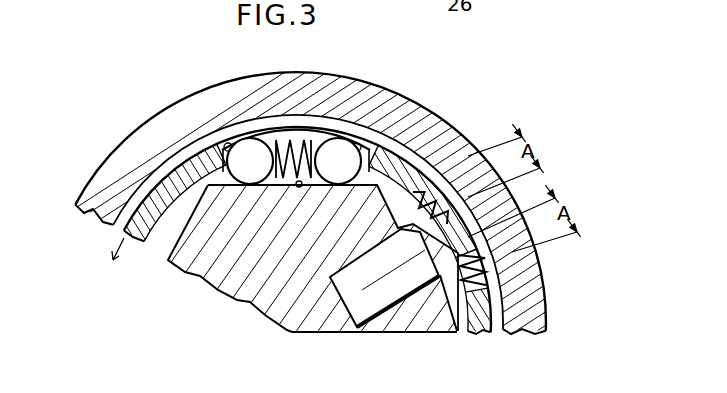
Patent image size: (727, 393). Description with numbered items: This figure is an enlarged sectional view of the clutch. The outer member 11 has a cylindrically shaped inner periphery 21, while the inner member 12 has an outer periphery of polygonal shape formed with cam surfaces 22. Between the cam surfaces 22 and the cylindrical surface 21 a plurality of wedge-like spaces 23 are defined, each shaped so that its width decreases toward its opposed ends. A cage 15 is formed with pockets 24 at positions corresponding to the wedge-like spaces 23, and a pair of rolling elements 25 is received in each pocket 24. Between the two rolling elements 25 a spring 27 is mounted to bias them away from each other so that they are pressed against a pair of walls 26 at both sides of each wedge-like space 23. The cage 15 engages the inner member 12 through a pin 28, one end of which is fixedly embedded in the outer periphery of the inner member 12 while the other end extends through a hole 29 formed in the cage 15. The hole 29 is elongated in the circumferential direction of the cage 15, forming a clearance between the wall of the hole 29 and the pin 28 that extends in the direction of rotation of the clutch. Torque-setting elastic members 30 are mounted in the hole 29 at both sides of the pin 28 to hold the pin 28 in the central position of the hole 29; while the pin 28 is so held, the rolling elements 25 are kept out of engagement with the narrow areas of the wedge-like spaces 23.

The outer member 11 is at (104, 166).
The inner member 12 is at (197, 262).
The cage 15 is at (175, 173).
The inner periphery 21 is at (283, 118).
The cam surfaces 22 is at (276, 185).
The wedge-like spaces 23 is at (392, 157).
The pockets 24 is at (296, 135).
The rolling elements 25 is at (250, 140).
The walls 26 is at (230, 128).
The spring 27 is at (299, 187).
The pin 28 is at (398, 280).
The hole 29 is at (483, 300).
The torque-setting elastic members 30 is at (447, 285).